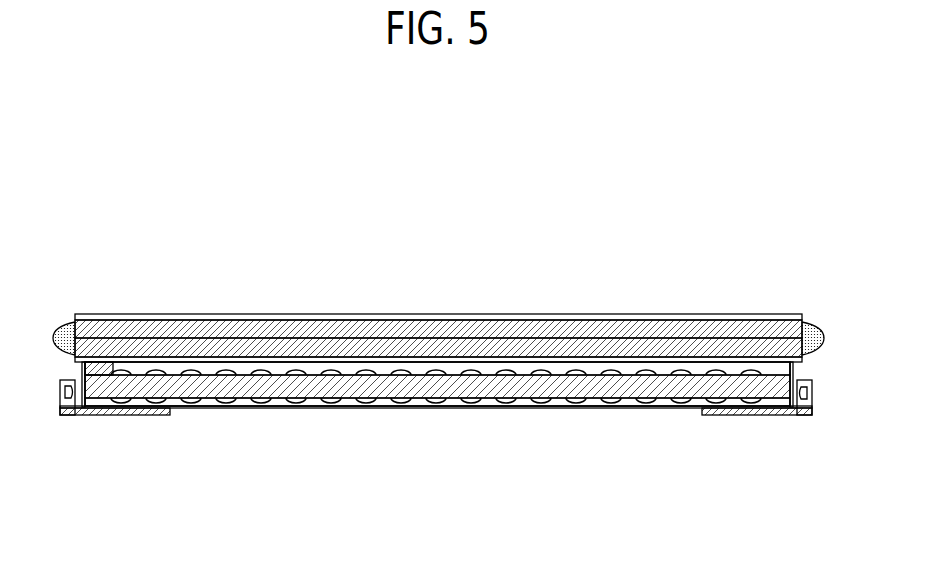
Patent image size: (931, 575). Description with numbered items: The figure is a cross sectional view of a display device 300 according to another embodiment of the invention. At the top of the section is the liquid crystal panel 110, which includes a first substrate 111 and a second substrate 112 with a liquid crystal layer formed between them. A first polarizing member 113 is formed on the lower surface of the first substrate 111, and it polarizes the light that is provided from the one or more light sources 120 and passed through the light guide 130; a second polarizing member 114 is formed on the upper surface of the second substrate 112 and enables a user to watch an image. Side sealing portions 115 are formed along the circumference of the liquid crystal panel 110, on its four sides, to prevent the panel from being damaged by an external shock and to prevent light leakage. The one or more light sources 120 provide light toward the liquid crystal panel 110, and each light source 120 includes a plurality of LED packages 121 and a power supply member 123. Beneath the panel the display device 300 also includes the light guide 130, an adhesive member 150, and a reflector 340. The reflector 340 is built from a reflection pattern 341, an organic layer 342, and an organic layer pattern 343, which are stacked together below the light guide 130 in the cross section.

The display device 300 is at (157, 194).
The liquid crystal panel 110 is at (567, 242).
The first substrate 111 is at (398, 348).
The second substrate 112 is at (452, 332).
The first polarizing member 113 is at (498, 358).
The second polarizing member 114 is at (555, 318).
The side sealing portion 115 is at (816, 330).
The adhesive member 150 is at (754, 374).
The light source 120 is at (815, 489).
The LED package 121 is at (800, 418).
The power supply member 123 is at (747, 418).
The light guide 130 is at (402, 387).
The reflector 340 is at (612, 467).
The reflection pattern 341 is at (473, 403).
The organic layer 342 is at (557, 407).
The organic layer pattern 343 is at (603, 380).